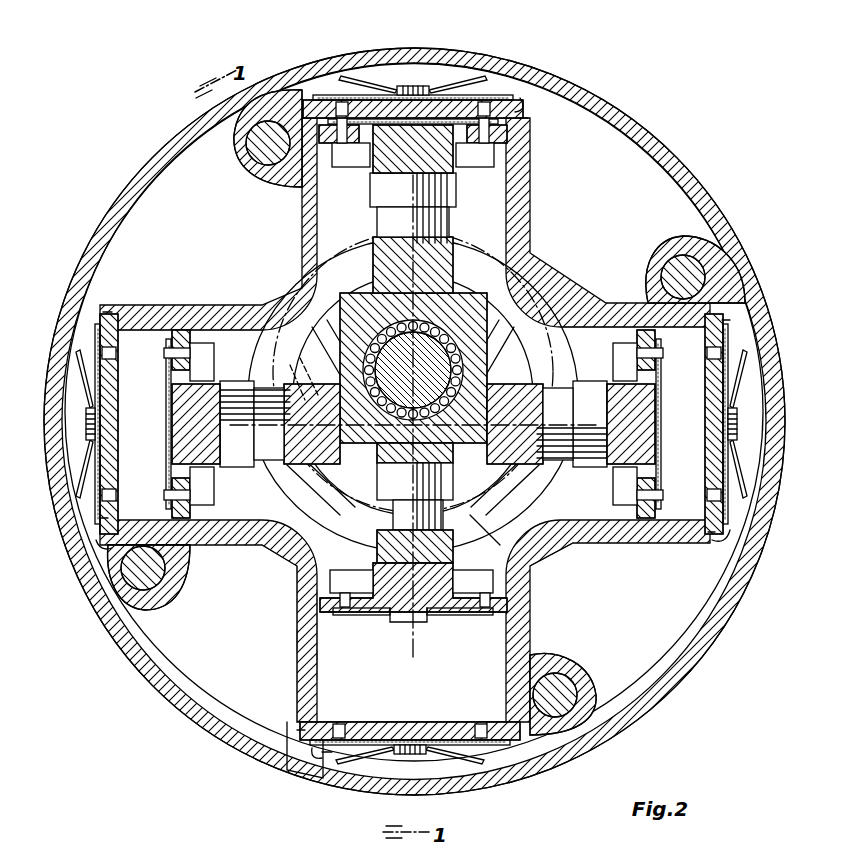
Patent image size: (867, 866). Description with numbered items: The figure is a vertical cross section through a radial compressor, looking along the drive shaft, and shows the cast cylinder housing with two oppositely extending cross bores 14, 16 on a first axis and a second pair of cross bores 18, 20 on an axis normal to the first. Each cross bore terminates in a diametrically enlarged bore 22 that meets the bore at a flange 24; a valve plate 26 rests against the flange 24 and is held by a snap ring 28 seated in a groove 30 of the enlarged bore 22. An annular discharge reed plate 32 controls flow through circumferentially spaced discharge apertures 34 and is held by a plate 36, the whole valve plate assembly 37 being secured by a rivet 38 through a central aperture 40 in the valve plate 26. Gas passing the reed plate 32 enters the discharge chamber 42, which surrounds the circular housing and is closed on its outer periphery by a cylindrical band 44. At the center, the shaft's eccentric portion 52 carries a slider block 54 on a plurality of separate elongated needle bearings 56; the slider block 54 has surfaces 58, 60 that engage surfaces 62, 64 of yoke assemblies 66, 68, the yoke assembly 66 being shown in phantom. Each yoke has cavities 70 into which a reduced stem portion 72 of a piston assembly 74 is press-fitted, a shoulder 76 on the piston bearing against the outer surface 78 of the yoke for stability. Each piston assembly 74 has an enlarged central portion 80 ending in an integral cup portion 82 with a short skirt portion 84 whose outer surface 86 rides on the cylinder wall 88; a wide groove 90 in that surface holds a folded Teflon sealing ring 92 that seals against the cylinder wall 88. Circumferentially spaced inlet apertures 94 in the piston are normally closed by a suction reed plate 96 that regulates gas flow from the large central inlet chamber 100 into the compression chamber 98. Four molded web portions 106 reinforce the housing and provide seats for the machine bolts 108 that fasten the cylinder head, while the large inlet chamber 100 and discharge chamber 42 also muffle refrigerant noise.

The cross bore 14 is at (318, 685).
The cross bore 16 is at (318, 222).
The cross bore 18 is at (150, 330).
The cross bore 20 is at (660, 325).
The enlarged bore 22 is at (518, 96).
The flange 24 is at (520, 118).
The valve plate 26 is at (332, 100).
The snap ring 28 is at (104, 312).
The groove 30 is at (300, 742).
The discharge reed plate 32 is at (388, 98).
The discharge apertures 34 is at (482, 102).
The plate 36 is at (465, 88).
The valve plate assembly 37 is at (392, 78).
The rivet 38 is at (432, 92).
The central aperture 40 is at (412, 735).
The discharge chamber 42 is at (500, 790).
The cylindrical band 44 is at (552, 765).
The eccentric portion 52 is at (413, 340).
The slider block 54 is at (348, 458).
The needle bearings 56 is at (455, 372).
The surface 58 is at (462, 278).
The surface 60 is at (330, 320).
The surface 62 is at (470, 300).
The surface 64 is at (335, 360).
The yoke assembly 66 is at (463, 520).
The yoke assembly 68 is at (272, 548).
The cavity 70 is at (295, 470).
The stem portion 72 is at (300, 380).
The piston assembly 74 is at (474, 150).
The shoulder 76 is at (440, 600).
The outer surface 78 is at (555, 378).
The central portion 80 is at (395, 614).
The cup portion 82 is at (446, 614).
The skirt portion 84 is at (315, 630).
The outer surface 86 is at (305, 578).
The cylinder wall 88 is at (296, 636).
The groove 90 is at (312, 598).
The sealing ring 92 is at (336, 578).
The inlet apertures 94 is at (500, 607).
The suction reed plate 96 is at (653, 368).
The compression chamber 98 is at (330, 662).
The inlet chamber 100 is at (540, 542).
The web portions 106 is at (252, 185).
The machine bolts 108 is at (262, 148).